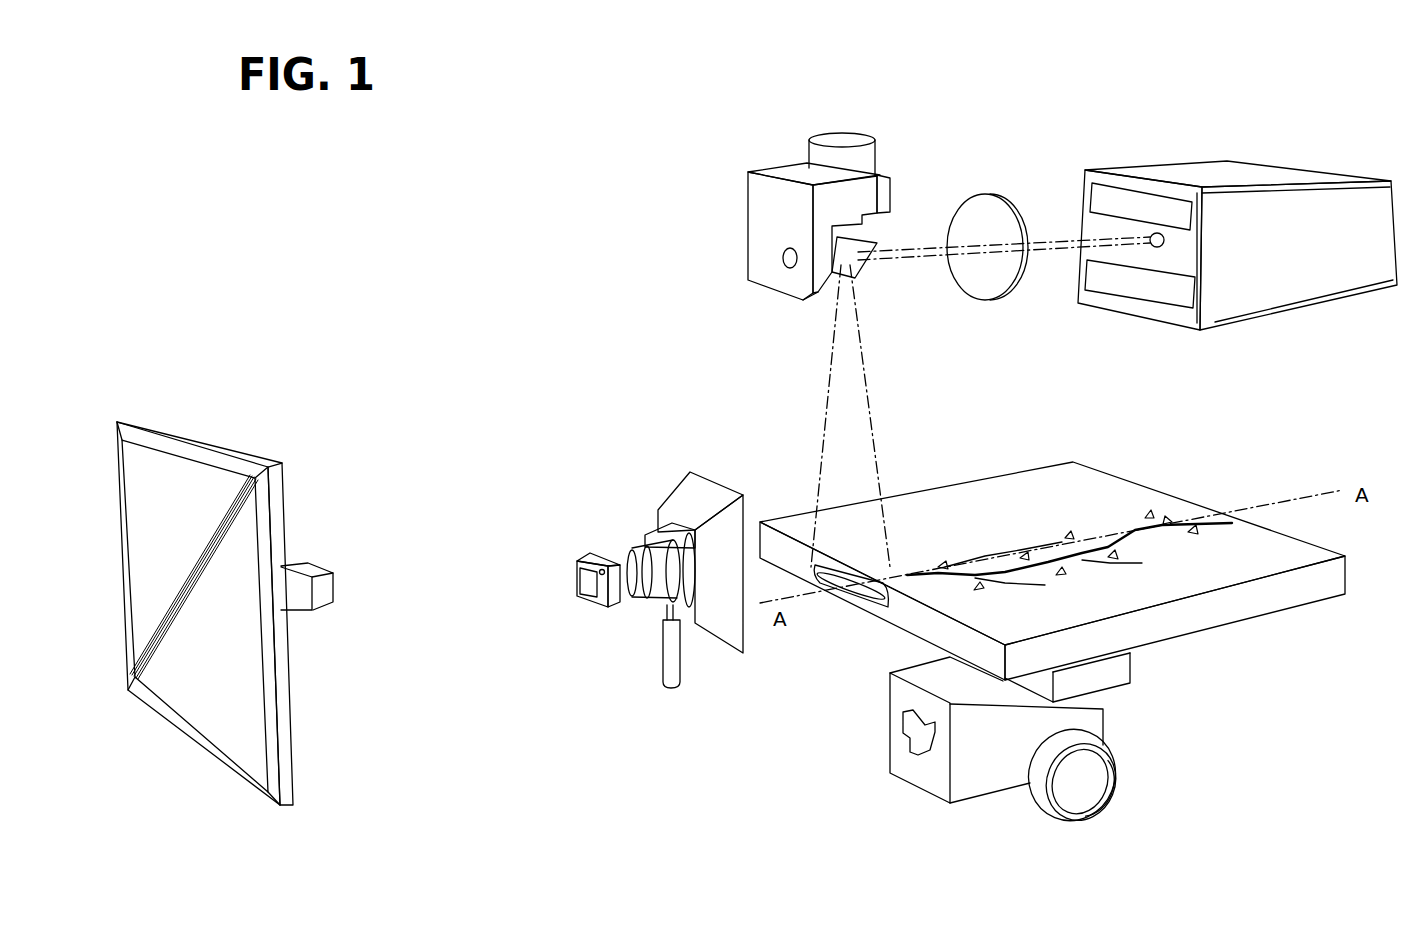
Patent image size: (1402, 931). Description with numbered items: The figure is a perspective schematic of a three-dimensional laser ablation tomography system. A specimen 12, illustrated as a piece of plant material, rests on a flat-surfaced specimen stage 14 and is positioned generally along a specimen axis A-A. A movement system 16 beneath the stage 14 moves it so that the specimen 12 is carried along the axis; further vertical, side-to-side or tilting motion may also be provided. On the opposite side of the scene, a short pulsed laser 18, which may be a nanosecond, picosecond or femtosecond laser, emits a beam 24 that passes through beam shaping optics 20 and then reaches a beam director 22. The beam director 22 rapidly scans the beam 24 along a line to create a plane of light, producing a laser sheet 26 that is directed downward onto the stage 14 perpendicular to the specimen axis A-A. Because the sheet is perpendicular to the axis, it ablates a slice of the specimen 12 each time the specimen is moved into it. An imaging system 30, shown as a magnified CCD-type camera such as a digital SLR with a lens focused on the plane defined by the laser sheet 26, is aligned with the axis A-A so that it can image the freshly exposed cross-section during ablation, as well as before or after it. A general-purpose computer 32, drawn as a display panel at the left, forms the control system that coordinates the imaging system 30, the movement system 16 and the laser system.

The specimen 12 is at (1067, 528).
The specimen stage 14 is at (1220, 610).
The movement system 16 is at (1087, 715).
The short pulsed laser 18 is at (1227, 173).
The beam shaping optics 20 is at (980, 208).
The beam director 22 is at (767, 203).
The beam 24 is at (1055, 243).
The laser sheet 26 is at (820, 437).
The imaging system 30 is at (640, 597).
The general-purpose computer 32 is at (285, 724).